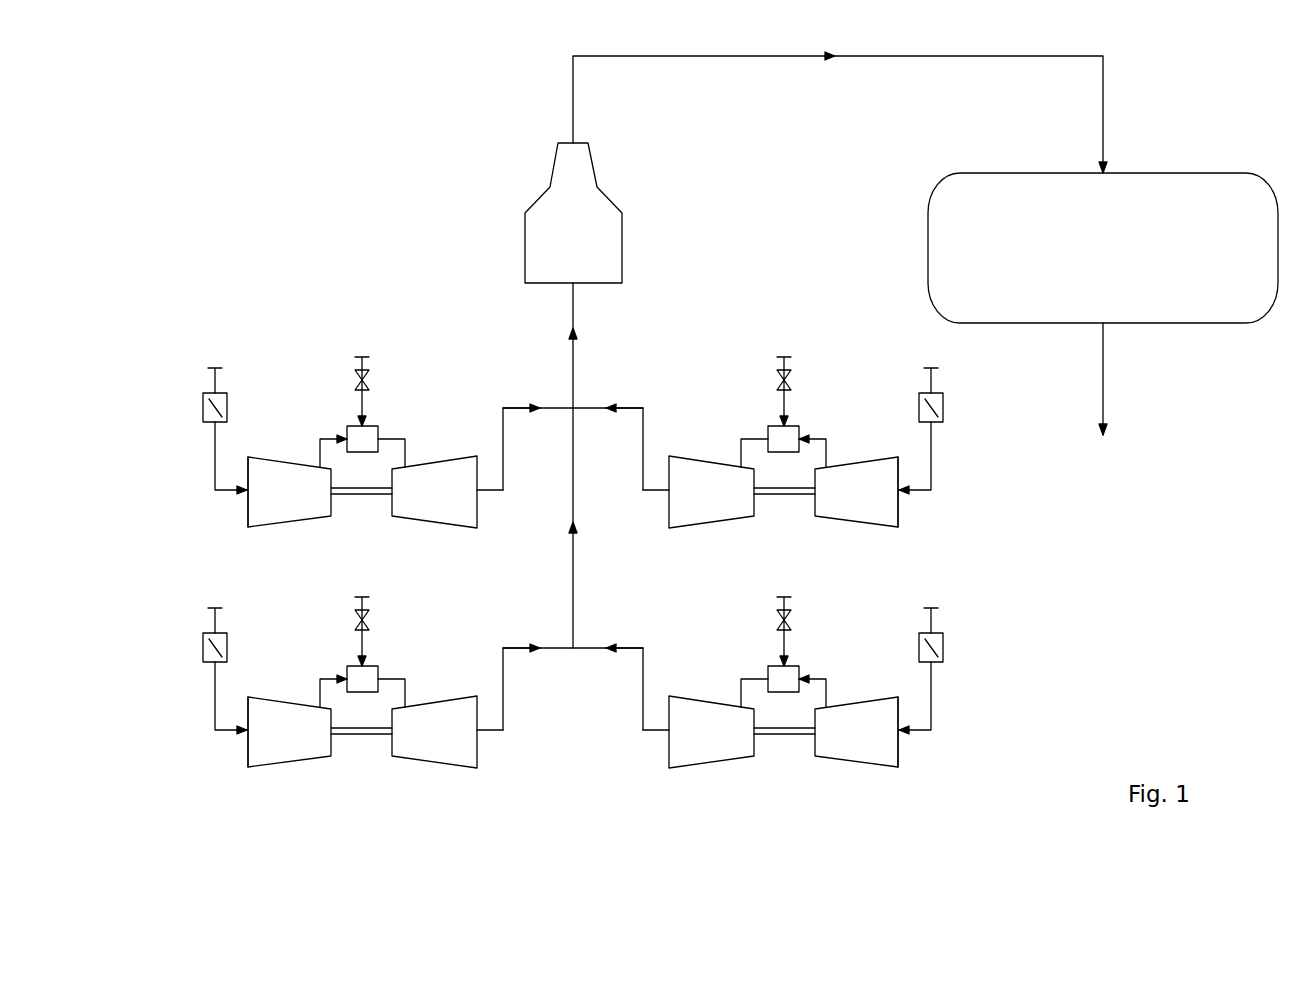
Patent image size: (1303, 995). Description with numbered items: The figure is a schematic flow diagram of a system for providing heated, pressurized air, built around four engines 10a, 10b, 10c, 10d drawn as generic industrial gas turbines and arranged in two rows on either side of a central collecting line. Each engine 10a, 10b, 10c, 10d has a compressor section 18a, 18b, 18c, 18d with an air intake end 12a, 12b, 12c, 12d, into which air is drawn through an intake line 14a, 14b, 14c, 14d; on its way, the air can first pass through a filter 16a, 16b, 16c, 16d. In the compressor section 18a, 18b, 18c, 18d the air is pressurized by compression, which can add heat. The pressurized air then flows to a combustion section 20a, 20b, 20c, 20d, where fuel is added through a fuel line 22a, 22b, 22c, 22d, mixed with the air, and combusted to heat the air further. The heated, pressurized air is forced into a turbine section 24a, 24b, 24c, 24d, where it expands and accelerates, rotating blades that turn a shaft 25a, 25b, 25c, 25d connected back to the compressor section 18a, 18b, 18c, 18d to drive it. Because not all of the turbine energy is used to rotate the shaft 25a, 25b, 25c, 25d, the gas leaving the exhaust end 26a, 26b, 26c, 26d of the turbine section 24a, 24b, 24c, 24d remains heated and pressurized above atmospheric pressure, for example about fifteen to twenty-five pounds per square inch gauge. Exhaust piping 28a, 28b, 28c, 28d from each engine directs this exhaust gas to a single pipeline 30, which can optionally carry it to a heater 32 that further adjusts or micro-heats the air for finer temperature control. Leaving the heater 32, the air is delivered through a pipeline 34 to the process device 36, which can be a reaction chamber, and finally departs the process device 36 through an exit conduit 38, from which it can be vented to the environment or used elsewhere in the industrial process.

The engine 10a is at (395, 366).
The engine 10b is at (341, 722).
The engine 10c is at (810, 724).
The engine 10d is at (760, 366).
The air intake end 12a is at (247, 503).
The air intake end 12b is at (200, 737).
The air intake end 12c is at (948, 742).
The air intake end 12d is at (900, 506).
The intake line 14a is at (216, 450).
The intake line 14b is at (257, 695).
The intake line 14c is at (892, 695).
The intake line 14d is at (931, 452).
The filter 16a is at (203, 404).
The filter 16b is at (177, 635).
The filter 16c is at (972, 635).
The filter 16d is at (945, 403).
The compressor section 18a is at (265, 503).
The compressor section 18b is at (289, 732).
The compressor section 18c is at (856, 732).
The compressor section 18d is at (831, 503).
The combustion section 20a is at (353, 425).
The combustion section 20b is at (346, 664).
The combustion section 20c is at (801, 664).
The combustion section 20d is at (797, 424).
The fuel line 22a is at (366, 400).
The fuel line 22b is at (399, 631).
The fuel line 22c is at (749, 631).
The fuel line 22d is at (781, 404).
The turbine section 24a is at (410, 503).
The turbine section 24b is at (434, 732).
The turbine section 24c is at (711, 732).
The turbine section 24d is at (686, 503).
The shaft 25a is at (363, 496).
The shaft 25b is at (346, 763).
The shaft 25c is at (800, 763).
The shaft 25d is at (782, 496).
The exhaust end 26a is at (478, 510).
The exhaust end 26b is at (515, 751).
The exhaust end 26c is at (632, 751).
The exhaust end 26d is at (669, 514).
The exhaust piping 28a is at (518, 406).
The exhaust piping 28b is at (496, 667).
The exhaust piping 28c is at (650, 667).
The exhaust piping 28d is at (645, 406).
The pipeline 30 is at (575, 312).
The heater 32 is at (624, 243).
The pipeline 34 is at (893, 58).
The process device 36 is at (930, 230).
The exit conduit 38 is at (1105, 383).